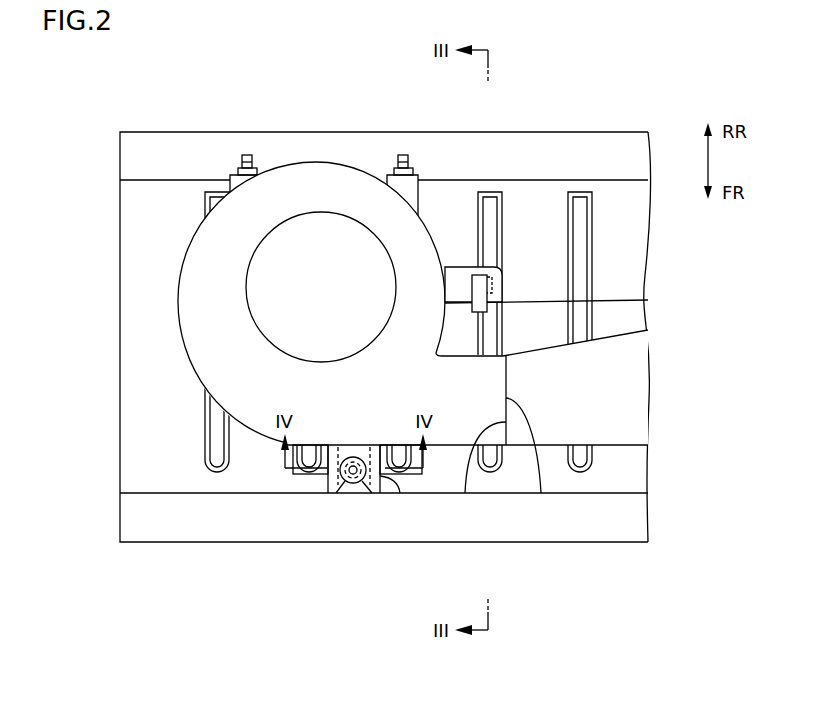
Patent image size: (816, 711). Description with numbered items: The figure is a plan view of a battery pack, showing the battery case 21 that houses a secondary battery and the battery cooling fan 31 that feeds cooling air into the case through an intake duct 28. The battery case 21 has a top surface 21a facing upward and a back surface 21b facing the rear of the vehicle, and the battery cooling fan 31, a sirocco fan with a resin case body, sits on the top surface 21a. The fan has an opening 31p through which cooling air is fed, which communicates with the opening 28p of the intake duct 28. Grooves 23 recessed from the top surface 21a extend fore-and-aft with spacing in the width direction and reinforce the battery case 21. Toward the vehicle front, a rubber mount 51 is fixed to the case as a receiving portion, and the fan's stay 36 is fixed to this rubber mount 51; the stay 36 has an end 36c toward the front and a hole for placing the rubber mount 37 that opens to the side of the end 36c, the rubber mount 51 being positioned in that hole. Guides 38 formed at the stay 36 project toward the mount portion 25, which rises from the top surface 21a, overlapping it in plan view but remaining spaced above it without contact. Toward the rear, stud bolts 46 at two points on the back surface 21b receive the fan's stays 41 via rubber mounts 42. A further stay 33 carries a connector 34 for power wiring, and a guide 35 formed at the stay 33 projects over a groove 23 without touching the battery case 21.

The battery case 21 is at (120, 415).
The top surface 21a is at (626, 468).
The back surface 21b is at (157, 180).
The grooves 23 is at (490, 220).
The mount portion 25 is at (378, 480).
The intake duct 28 is at (626, 390).
The opening 28p is at (466, 498).
The battery cooling fan 31 is at (200, 300).
The opening 31p is at (512, 495).
The stay 33 is at (462, 265).
The connector 34 is at (495, 304).
The guide 35 is at (500, 282).
The stay 36 is at (383, 482).
The end 36c is at (350, 485).
The hole for placing the rubber mount 37 is at (350, 480).
The guides 38 is at (325, 495).
The stays 41 is at (233, 187).
The rubber mounts 42 is at (257, 172).
The stud bolts 46 is at (246, 152).
The rubber mount 51 is at (328, 490).